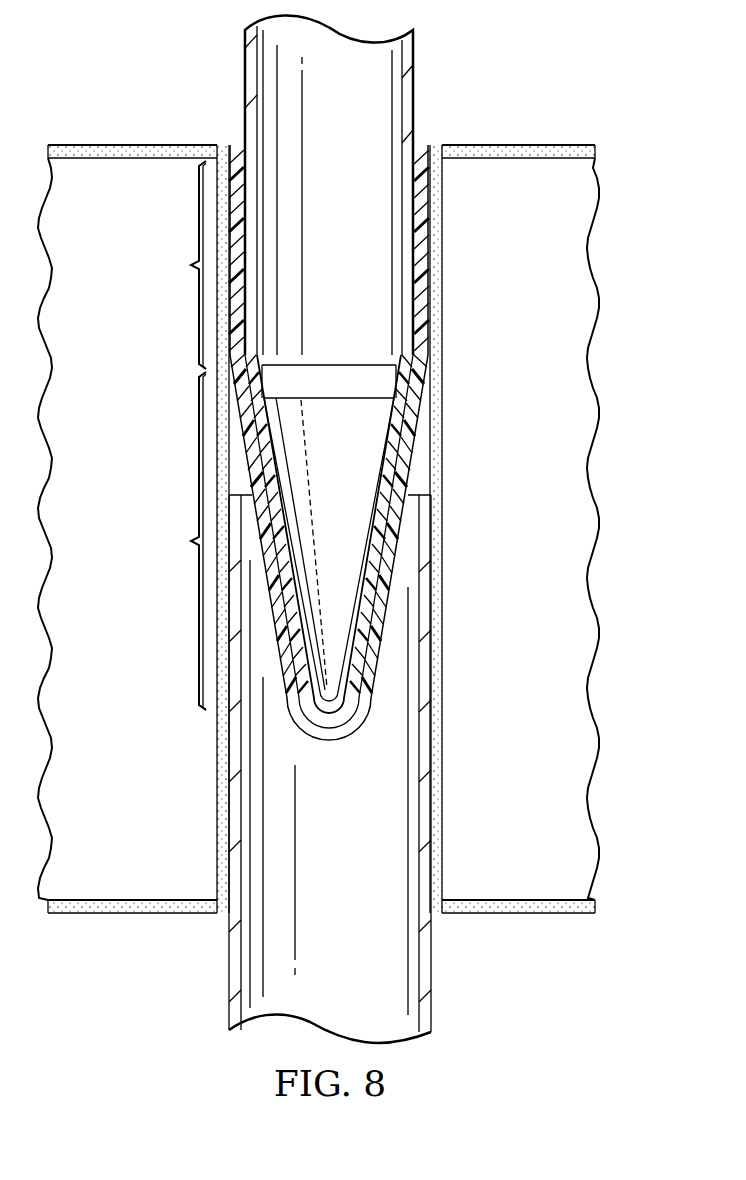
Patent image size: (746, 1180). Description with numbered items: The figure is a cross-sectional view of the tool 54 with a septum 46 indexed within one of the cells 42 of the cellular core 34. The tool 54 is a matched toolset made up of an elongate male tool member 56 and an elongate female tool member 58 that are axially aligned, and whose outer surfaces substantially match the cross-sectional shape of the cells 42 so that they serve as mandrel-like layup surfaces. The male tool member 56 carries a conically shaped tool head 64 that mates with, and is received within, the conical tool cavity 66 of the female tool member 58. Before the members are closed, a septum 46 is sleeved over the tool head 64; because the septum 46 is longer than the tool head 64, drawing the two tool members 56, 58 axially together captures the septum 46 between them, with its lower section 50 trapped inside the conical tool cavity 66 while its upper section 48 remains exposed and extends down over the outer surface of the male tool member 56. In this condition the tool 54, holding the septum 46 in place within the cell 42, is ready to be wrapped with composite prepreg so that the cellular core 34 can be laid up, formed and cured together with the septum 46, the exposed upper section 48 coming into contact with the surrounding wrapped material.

The cellular core 34 is at (588, 382).
The cell 42 is at (208, 794).
The septum 46 is at (430, 255).
The upper section 48 is at (180, 265).
The lower section 50 is at (180, 541).
The tool 54 is at (183, 104).
The male tool member 56 is at (412, 66).
The female tool member 58 is at (420, 1010).
The tool head 64 is at (342, 633).
The conical tool cavity 66 is at (368, 698).